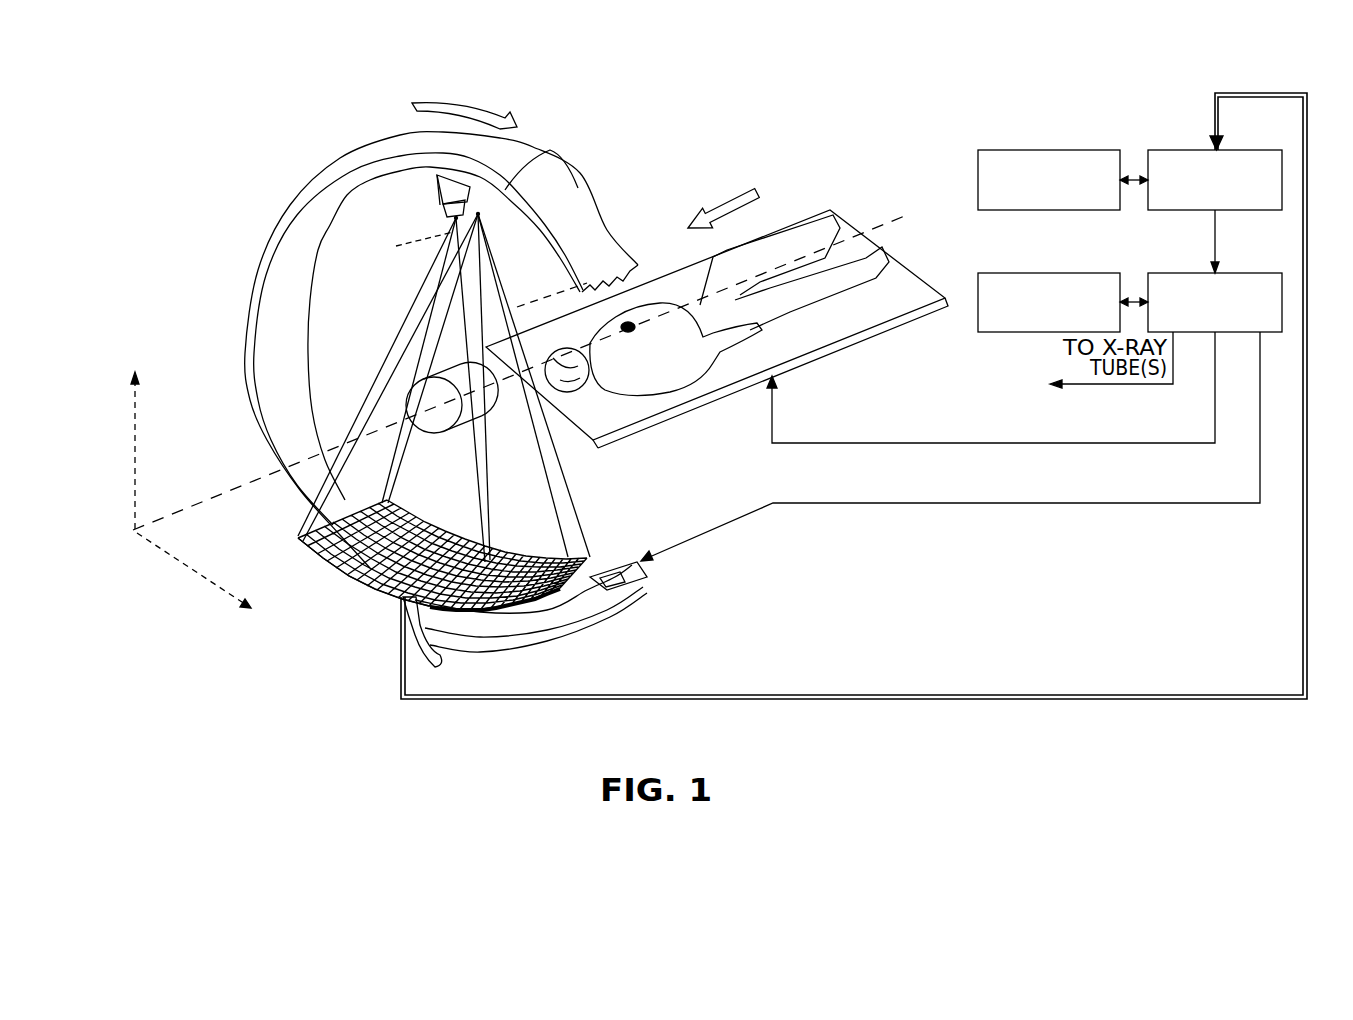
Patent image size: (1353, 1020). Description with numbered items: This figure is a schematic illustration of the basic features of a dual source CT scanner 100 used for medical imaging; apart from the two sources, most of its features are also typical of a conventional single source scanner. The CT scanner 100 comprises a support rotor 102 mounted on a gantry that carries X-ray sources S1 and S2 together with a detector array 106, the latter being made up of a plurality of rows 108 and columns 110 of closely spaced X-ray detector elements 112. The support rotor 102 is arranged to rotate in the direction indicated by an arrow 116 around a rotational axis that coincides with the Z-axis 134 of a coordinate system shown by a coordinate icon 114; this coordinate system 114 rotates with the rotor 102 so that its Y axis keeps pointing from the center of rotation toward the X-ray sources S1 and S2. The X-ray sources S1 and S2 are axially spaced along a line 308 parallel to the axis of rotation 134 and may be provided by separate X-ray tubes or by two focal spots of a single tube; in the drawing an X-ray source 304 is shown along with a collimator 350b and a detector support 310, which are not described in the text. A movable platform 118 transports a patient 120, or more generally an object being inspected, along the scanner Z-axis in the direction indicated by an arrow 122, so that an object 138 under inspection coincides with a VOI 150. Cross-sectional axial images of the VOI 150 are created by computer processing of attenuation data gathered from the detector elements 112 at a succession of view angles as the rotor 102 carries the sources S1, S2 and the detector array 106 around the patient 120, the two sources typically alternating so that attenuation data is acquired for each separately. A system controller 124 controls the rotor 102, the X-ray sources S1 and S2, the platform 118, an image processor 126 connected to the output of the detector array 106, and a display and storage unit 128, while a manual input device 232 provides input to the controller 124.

The dual source CT scanner 100 is at (272, 92).
The support rotor 102 is at (403, 143).
The arrow 116 is at (481, 111).
The x-ray source 304 is at (437, 207).
The X-ray source S1 is at (450, 218).
The X-ray source S2 is at (490, 197).
The collimator 350b is at (450, 243).
The line 308 is at (376, 250).
The object under inspection 138 is at (627, 305).
The arrow 122 is at (737, 191).
The patient 120 is at (747, 250).
The movable platform 118 is at (875, 318).
The VOI 150 is at (472, 398).
The Z-axis 134 is at (237, 487).
The coordinate icon 114 is at (140, 537).
The columns 110 is at (302, 515).
The rows 108 is at (302, 550).
The detector support arc 310 is at (327, 620).
The X-ray detector elements 112 is at (435, 660).
The detector array 106 is at (615, 562).
The display and storage unit 128 is at (1055, 150).
The image processor 126 is at (1232, 150).
The manual input device 232 is at (1073, 273).
The system controller 124 is at (1232, 273).